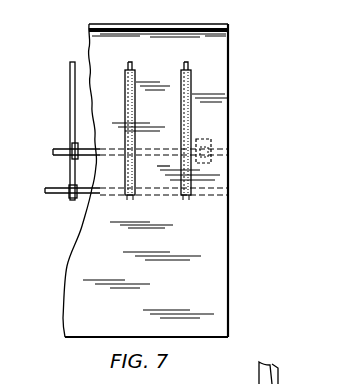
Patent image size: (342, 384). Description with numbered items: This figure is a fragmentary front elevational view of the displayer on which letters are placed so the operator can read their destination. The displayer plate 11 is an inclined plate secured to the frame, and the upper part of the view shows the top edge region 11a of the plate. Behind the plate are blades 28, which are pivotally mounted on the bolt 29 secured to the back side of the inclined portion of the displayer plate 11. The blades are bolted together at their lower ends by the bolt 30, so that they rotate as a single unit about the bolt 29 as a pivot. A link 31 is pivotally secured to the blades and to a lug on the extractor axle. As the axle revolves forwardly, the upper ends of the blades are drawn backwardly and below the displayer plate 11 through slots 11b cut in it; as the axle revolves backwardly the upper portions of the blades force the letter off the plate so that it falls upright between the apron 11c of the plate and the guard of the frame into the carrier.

The displayer plate 11 is at (211, 210).
The top wall of casing 11a is at (221, 29).
The slots 11b is at (189, 85).
The apron 11c is at (196, 275).
The blades 28 is at (189, 122).
The bolt 29 is at (57, 152).
The bolt 30 is at (55, 195).
The link 31 is at (77, 199).